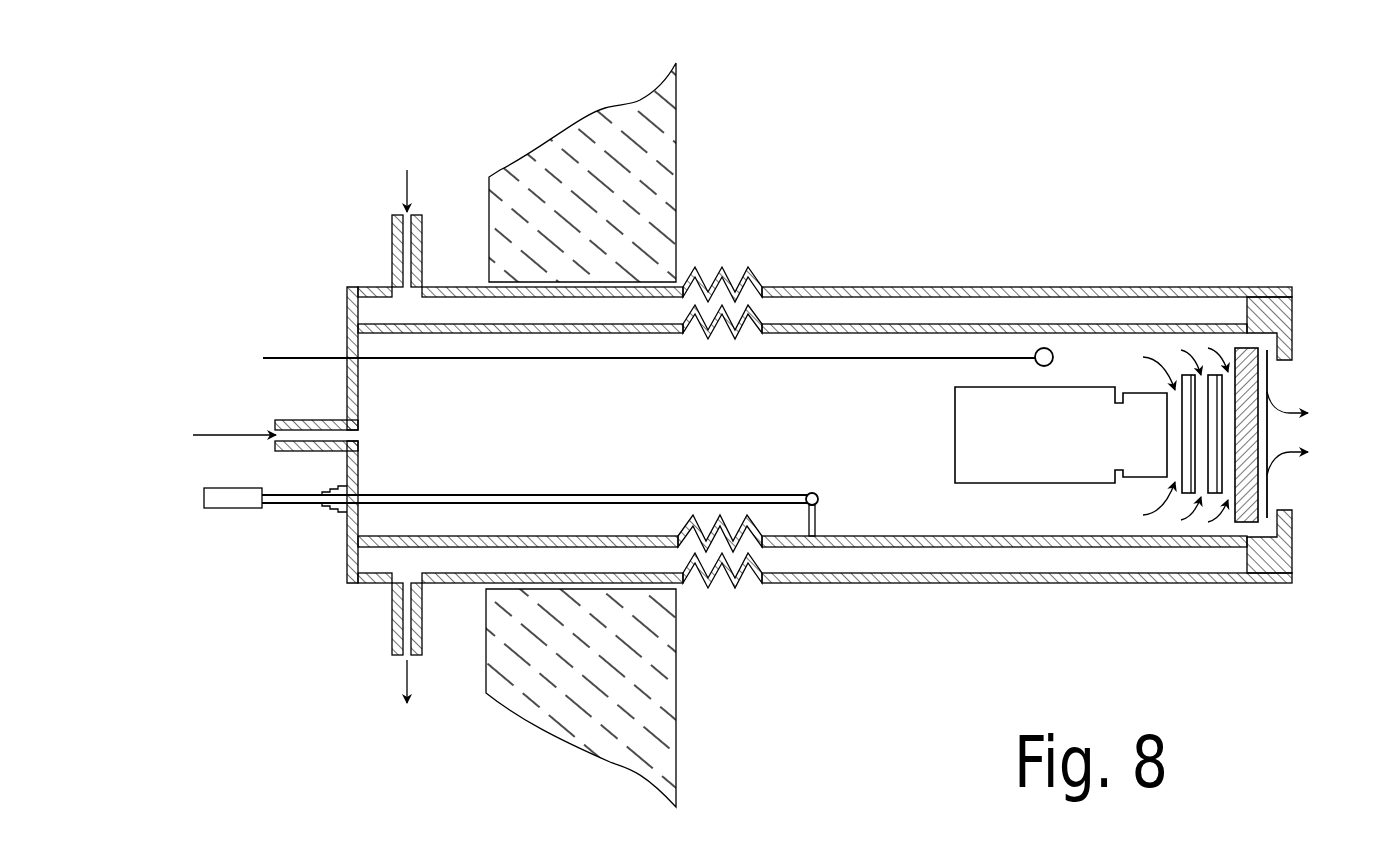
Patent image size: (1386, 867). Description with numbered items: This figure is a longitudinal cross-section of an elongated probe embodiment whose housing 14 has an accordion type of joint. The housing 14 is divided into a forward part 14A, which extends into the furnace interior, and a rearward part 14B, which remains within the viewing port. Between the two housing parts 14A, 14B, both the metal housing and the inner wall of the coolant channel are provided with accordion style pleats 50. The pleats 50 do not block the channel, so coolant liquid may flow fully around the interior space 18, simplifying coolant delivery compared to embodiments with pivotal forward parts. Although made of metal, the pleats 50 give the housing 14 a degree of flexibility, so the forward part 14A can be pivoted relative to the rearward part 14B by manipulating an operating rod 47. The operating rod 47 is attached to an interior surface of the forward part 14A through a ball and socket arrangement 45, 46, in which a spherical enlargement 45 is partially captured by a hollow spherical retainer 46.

The housing 14 is at (1077, 198).
The forward part 14A is at (909, 287).
The rearward part 14B is at (378, 284).
The interior space 18 is at (802, 435).
The spherical enlargement 45 is at (818, 504).
The spherical retainer 46 is at (815, 491).
The operating rod 47 is at (545, 493).
The accordion style pleats 50 is at (735, 250).